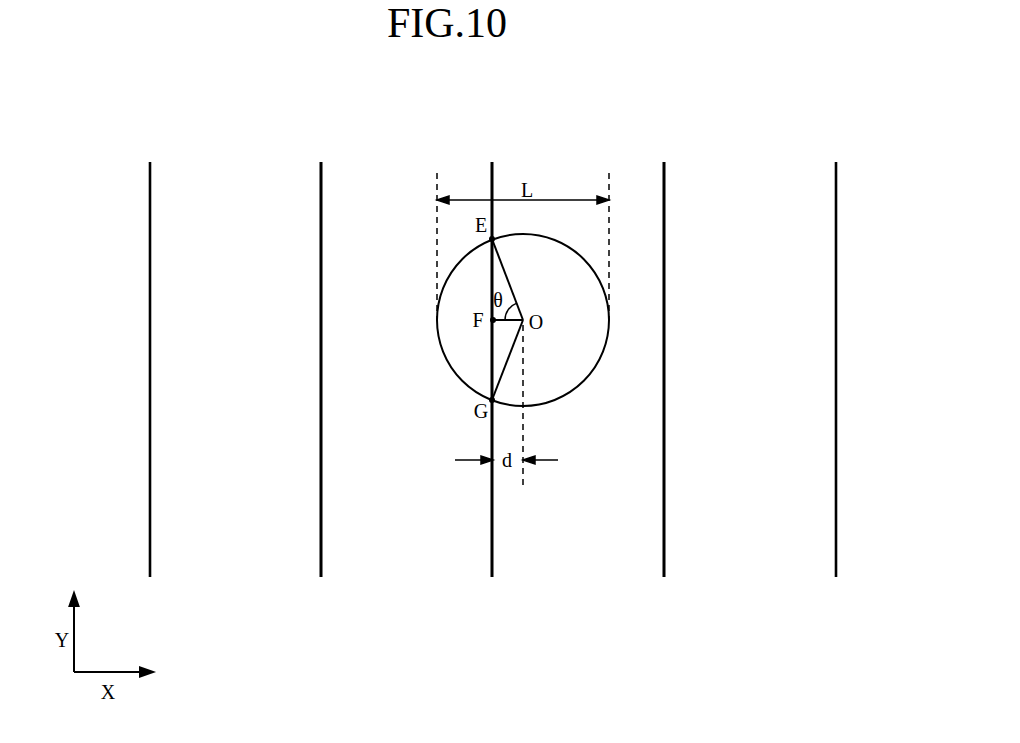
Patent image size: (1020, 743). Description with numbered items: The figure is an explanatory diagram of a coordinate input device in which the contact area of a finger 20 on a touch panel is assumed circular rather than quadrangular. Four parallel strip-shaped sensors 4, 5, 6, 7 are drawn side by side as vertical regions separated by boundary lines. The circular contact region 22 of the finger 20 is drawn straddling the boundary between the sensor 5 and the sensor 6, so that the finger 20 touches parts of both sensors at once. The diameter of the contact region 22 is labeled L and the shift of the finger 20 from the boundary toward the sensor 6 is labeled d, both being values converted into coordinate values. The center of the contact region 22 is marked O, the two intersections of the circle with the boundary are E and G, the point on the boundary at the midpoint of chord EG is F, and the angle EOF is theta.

The sensor 4 is at (251, 170).
The sensor 5 is at (387, 170).
The sensor 6 is at (565, 170).
The sensor 7 is at (751, 170).
The contact region 22 is at (540, 354).
The finger 20 is at (563, 373).